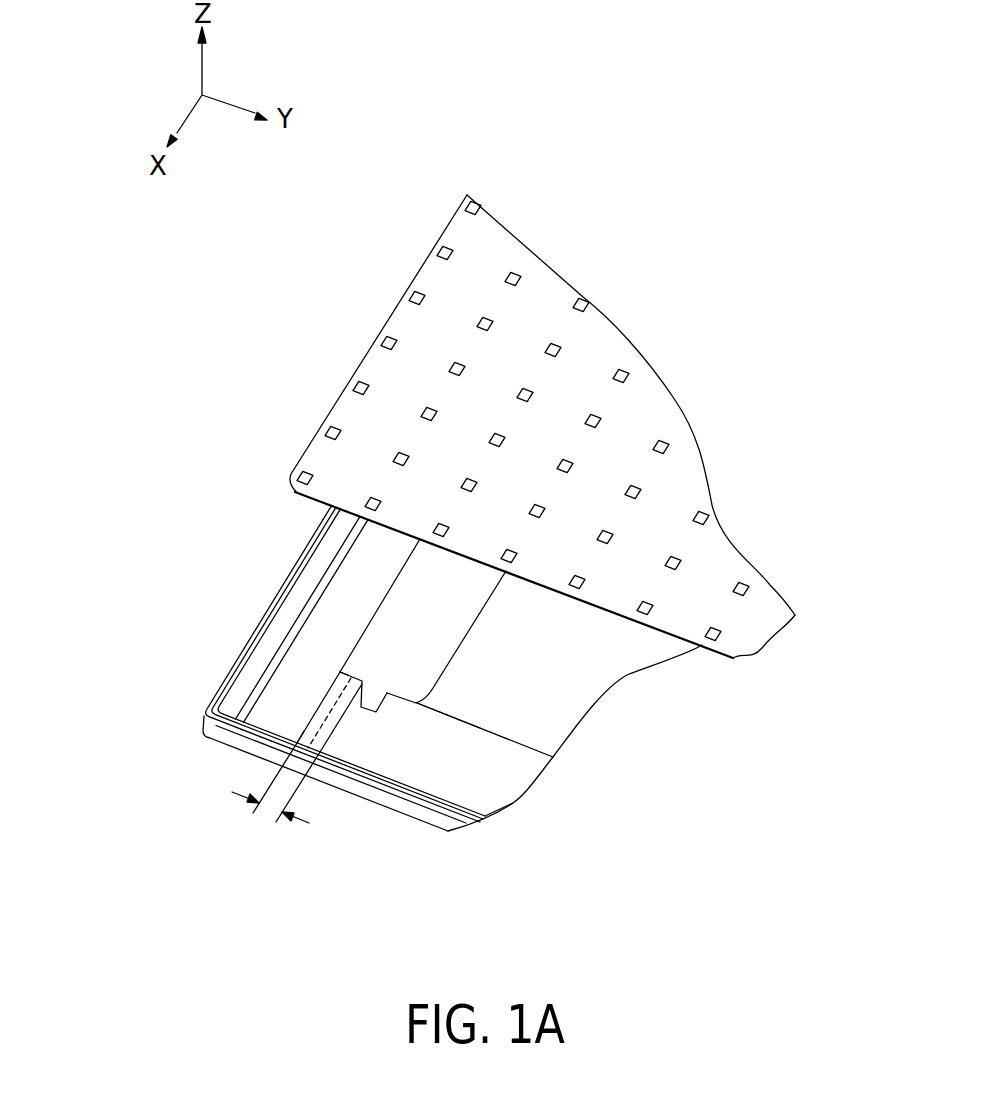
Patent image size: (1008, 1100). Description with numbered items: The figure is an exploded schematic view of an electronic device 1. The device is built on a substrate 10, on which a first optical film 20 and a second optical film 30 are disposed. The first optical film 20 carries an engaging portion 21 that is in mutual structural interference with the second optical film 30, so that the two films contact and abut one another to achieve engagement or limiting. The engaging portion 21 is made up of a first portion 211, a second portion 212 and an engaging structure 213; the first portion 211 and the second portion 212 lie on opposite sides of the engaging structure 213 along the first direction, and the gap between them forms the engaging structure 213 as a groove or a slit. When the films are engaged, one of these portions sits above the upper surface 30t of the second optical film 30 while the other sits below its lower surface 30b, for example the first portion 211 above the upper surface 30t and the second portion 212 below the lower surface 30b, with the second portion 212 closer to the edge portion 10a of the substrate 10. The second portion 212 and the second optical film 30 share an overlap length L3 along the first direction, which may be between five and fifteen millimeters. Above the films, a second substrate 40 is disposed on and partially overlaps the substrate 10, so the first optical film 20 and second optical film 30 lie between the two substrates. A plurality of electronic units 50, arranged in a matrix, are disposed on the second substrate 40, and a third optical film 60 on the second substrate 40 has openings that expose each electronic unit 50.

The electronic device 1 is at (557, 92).
The substrate 10 is at (614, 673).
The edge portion 10a is at (302, 556).
The first optical film 20 is at (433, 598).
The engaging portion 21 is at (296, 703).
The first portion 211 is at (373, 714).
The second portion 212 is at (287, 735).
The engaging structure 213 is at (335, 664).
The second optical film 30 is at (482, 777).
The lower surface 30b is at (517, 738).
The upper surface 30t is at (445, 774).
The second substrate 40 is at (679, 366).
The electronic units 50 is at (584, 300).
The third optical film 60 is at (560, 268).
The overlap length L3 is at (270, 822).